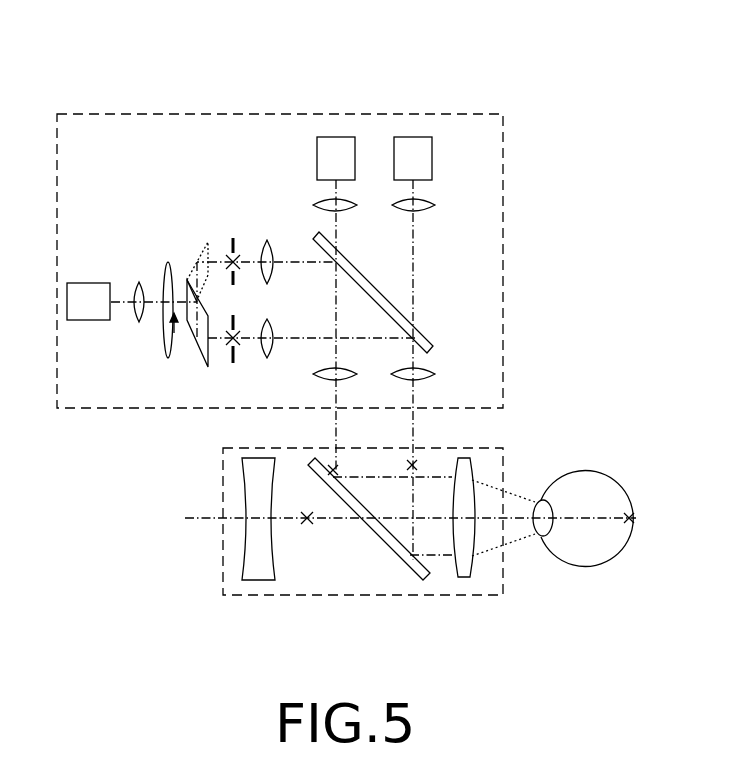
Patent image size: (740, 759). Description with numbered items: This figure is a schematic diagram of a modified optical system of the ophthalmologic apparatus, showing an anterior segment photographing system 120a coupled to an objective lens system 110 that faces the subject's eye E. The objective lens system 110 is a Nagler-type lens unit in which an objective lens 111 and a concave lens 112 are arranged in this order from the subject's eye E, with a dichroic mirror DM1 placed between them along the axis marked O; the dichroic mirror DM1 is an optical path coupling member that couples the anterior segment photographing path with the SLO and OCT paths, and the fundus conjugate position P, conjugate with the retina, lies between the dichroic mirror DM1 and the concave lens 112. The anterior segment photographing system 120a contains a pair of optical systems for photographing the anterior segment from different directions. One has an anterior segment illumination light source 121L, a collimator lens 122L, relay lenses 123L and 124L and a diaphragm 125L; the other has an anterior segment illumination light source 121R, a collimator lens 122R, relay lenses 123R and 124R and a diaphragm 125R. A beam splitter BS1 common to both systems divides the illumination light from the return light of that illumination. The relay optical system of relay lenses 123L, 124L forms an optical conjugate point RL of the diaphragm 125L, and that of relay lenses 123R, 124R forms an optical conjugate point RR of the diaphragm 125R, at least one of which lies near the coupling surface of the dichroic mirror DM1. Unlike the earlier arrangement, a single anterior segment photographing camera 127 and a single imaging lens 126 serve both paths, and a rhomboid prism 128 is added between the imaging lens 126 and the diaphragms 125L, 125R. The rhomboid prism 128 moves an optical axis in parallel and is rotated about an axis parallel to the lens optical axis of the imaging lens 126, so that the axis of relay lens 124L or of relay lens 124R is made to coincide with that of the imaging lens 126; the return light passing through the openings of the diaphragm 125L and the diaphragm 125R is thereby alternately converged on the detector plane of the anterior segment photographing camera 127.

The anterior segment photographing system 120a is at (503, 114).
The objective lens system 110 is at (503, 448).
The anterior segment illumination light source 121R is at (317, 160).
The anterior segment illumination light source 121L is at (432, 161).
The collimator lens 122R is at (315, 203).
The collimator lens 122L is at (454, 195).
The relay lens 123R is at (370, 363).
The relay lens 123L is at (452, 365).
The relay lens 124R is at (267, 240).
The relay lens 124L is at (268, 359).
The diaphragm 125R is at (233, 240).
The diaphragm 125L is at (234, 365).
The imaging lens 126 is at (140, 323).
The anterior segment photographing camera 127 is at (90, 321).
The rhomboid prism 128 is at (198, 350).
The beam splitter BS1 is at (422, 330).
The dichroic mirror DM1 is at (392, 553).
The objective lens 111 is at (463, 578).
The concave lens 112 is at (255, 581).
The fundus conjugate position P is at (306, 531).
The optical conjugate point RR is at (346, 466).
The optical conjugate point RL is at (426, 464).
The optical axis O is at (166, 520).
The subject's eye E is at (585, 470).